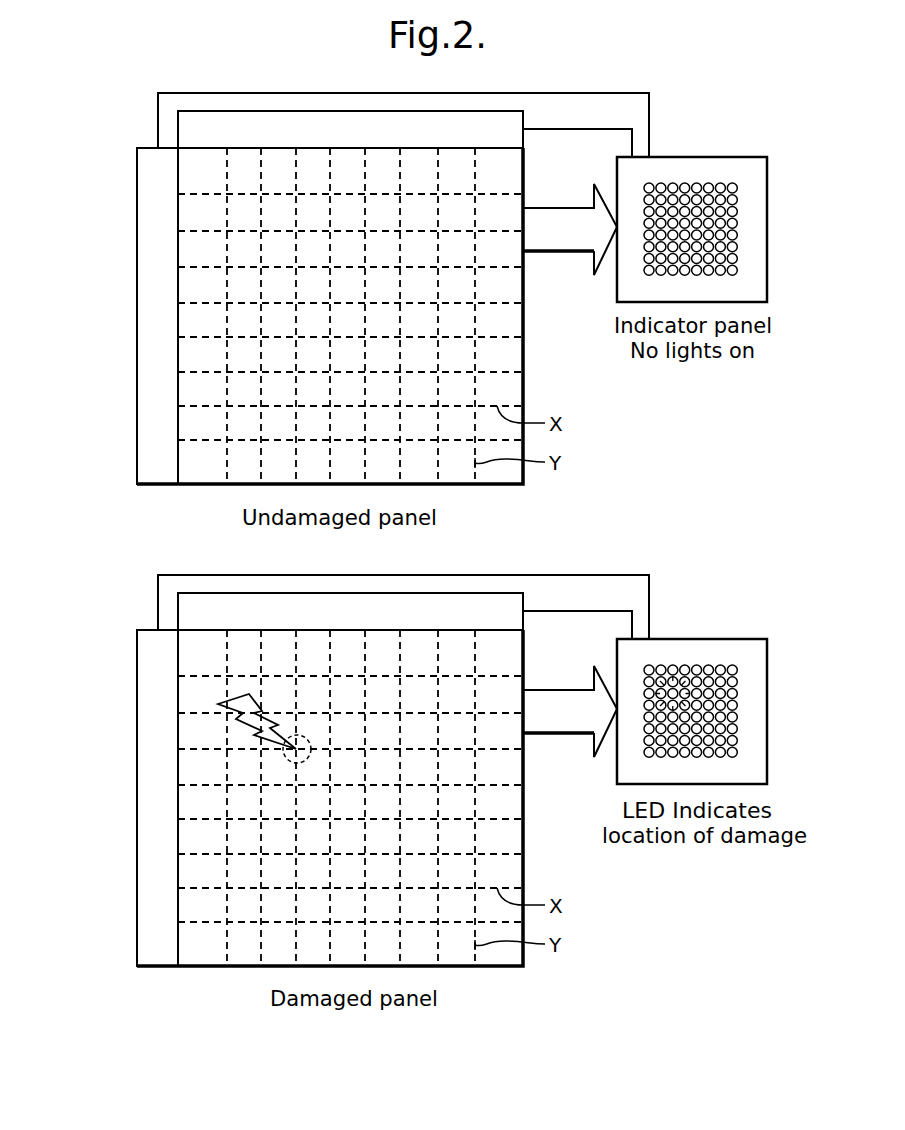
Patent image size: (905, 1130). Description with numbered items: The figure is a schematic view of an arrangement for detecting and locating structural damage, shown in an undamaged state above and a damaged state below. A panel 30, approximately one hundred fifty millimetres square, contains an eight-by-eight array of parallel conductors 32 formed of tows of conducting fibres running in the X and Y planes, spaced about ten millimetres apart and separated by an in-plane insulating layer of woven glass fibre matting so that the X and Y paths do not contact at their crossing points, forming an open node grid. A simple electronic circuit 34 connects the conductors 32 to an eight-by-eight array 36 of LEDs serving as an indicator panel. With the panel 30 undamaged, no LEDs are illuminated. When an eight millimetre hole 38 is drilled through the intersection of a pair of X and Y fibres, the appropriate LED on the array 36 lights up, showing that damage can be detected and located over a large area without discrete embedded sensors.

The panel 30 is at (258, 485).
The parallel conductors 32 is at (523, 303).
The electronic circuit 34 is at (353, 140).
The array of LEDs 36 is at (709, 160).
The hole 38 is at (282, 756).